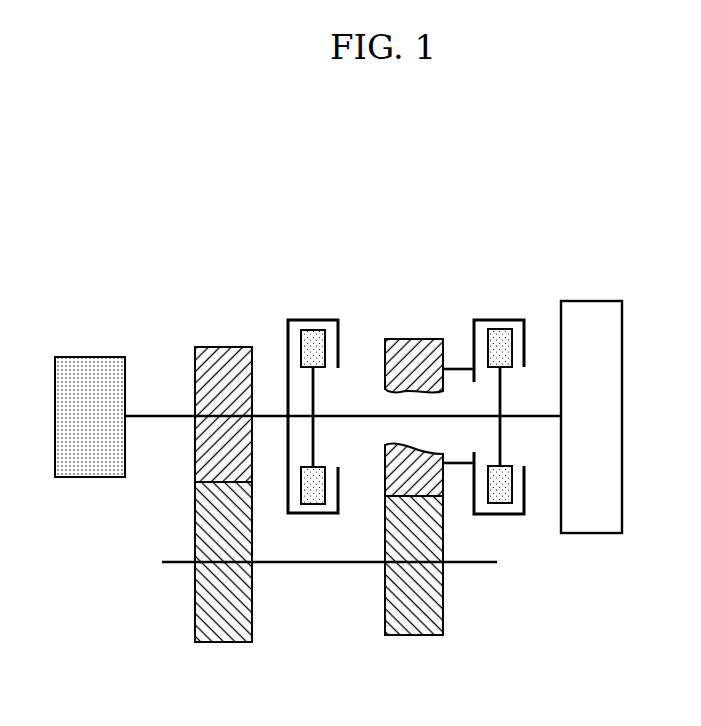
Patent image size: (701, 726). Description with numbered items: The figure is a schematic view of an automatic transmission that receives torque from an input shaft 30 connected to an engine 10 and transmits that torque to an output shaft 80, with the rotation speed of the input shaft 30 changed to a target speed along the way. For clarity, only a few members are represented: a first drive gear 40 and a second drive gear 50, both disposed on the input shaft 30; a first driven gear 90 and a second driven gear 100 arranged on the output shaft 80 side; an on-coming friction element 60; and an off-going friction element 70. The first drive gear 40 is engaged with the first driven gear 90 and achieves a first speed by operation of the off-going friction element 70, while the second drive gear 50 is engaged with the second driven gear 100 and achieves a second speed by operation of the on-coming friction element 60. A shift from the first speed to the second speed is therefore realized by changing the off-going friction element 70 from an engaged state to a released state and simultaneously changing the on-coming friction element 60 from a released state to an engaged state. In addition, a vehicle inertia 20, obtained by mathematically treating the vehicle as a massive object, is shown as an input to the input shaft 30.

The engine 10 is at (90, 360).
The vehicle inertia 20 is at (590, 303).
The input shaft 30 is at (160, 415).
The first drive gear 40 is at (414, 339).
The second drive gear 50 is at (222, 347).
The on-coming friction element 60 is at (325, 320).
The off-going friction element 70 is at (509, 320).
The output shaft 80 is at (469, 562).
The first driven gear 90 is at (416, 636).
The second driven gear 100 is at (225, 642).